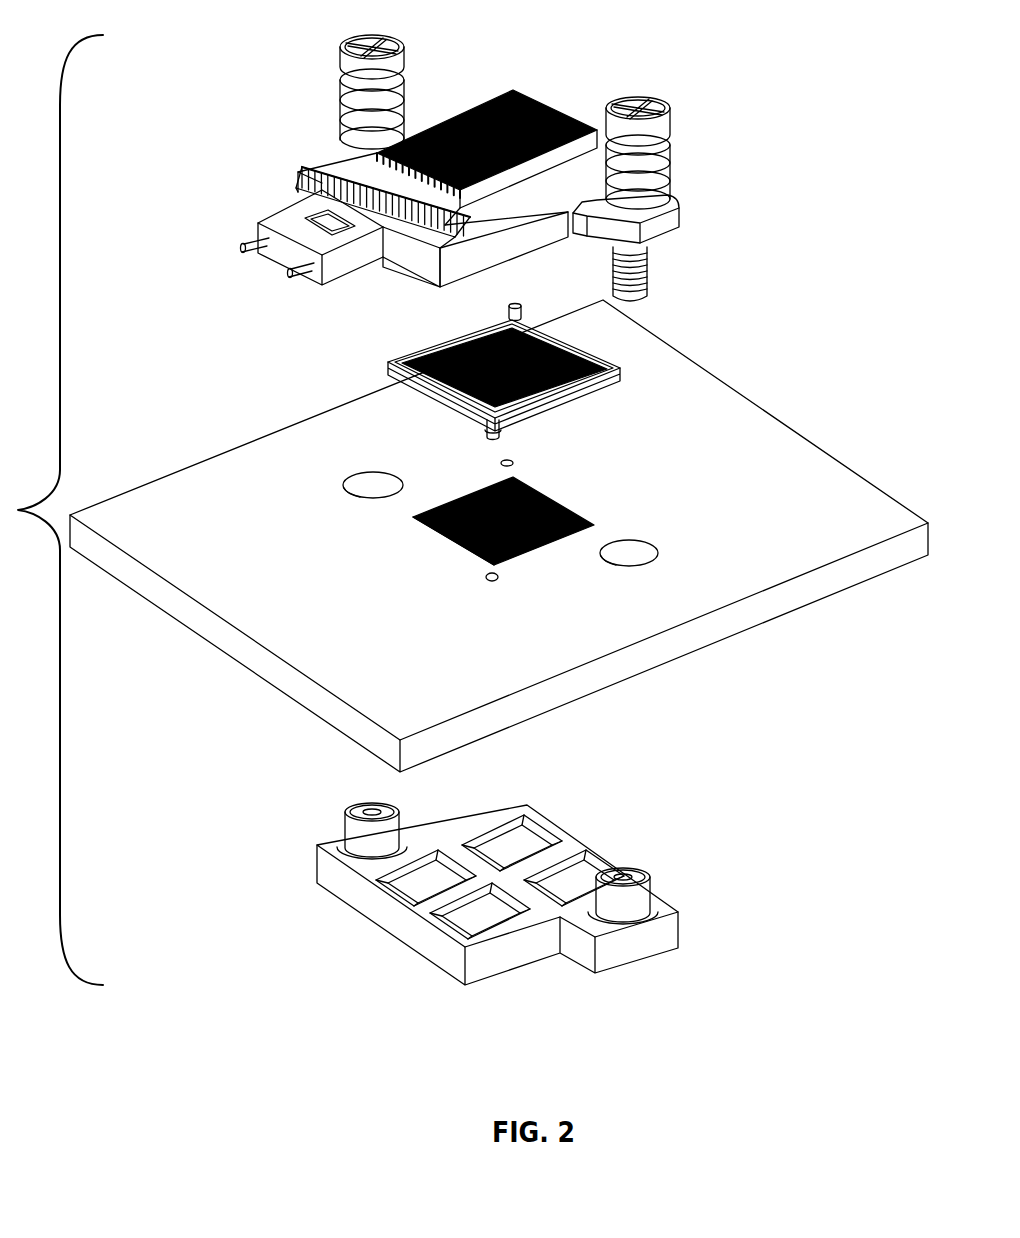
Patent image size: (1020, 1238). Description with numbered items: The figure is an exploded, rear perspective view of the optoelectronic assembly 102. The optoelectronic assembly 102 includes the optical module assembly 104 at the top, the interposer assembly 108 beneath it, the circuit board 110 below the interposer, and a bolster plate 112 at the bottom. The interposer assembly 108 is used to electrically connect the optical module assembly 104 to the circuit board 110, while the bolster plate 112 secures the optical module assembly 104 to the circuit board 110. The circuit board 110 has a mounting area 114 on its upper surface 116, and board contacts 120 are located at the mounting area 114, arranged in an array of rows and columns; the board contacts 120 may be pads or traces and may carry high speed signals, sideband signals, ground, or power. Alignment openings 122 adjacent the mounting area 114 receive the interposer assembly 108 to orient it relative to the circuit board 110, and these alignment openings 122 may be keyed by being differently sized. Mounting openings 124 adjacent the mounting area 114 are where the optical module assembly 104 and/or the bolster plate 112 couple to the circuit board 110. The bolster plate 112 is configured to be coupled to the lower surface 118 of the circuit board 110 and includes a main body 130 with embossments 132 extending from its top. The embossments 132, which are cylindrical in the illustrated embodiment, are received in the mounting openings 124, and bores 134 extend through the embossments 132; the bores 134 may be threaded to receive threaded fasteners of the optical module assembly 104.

The optoelectronic assembly 102 is at (818, 175).
The optical module assembly 104 is at (488, 68).
The interposer assembly 108 is at (608, 348).
The circuit board 110 is at (803, 468).
The bolster plate 112 is at (396, 923).
The mounting area 114 is at (572, 496).
The upper surface 116 is at (773, 575).
The lower surface 118 is at (722, 640).
The board contacts 120 is at (427, 527).
The alignment openings 122 is at (485, 587).
The mounting openings 124 is at (357, 478).
The main body 130 is at (503, 955).
The embossments 132 is at (352, 830).
The bores 134 is at (630, 874).